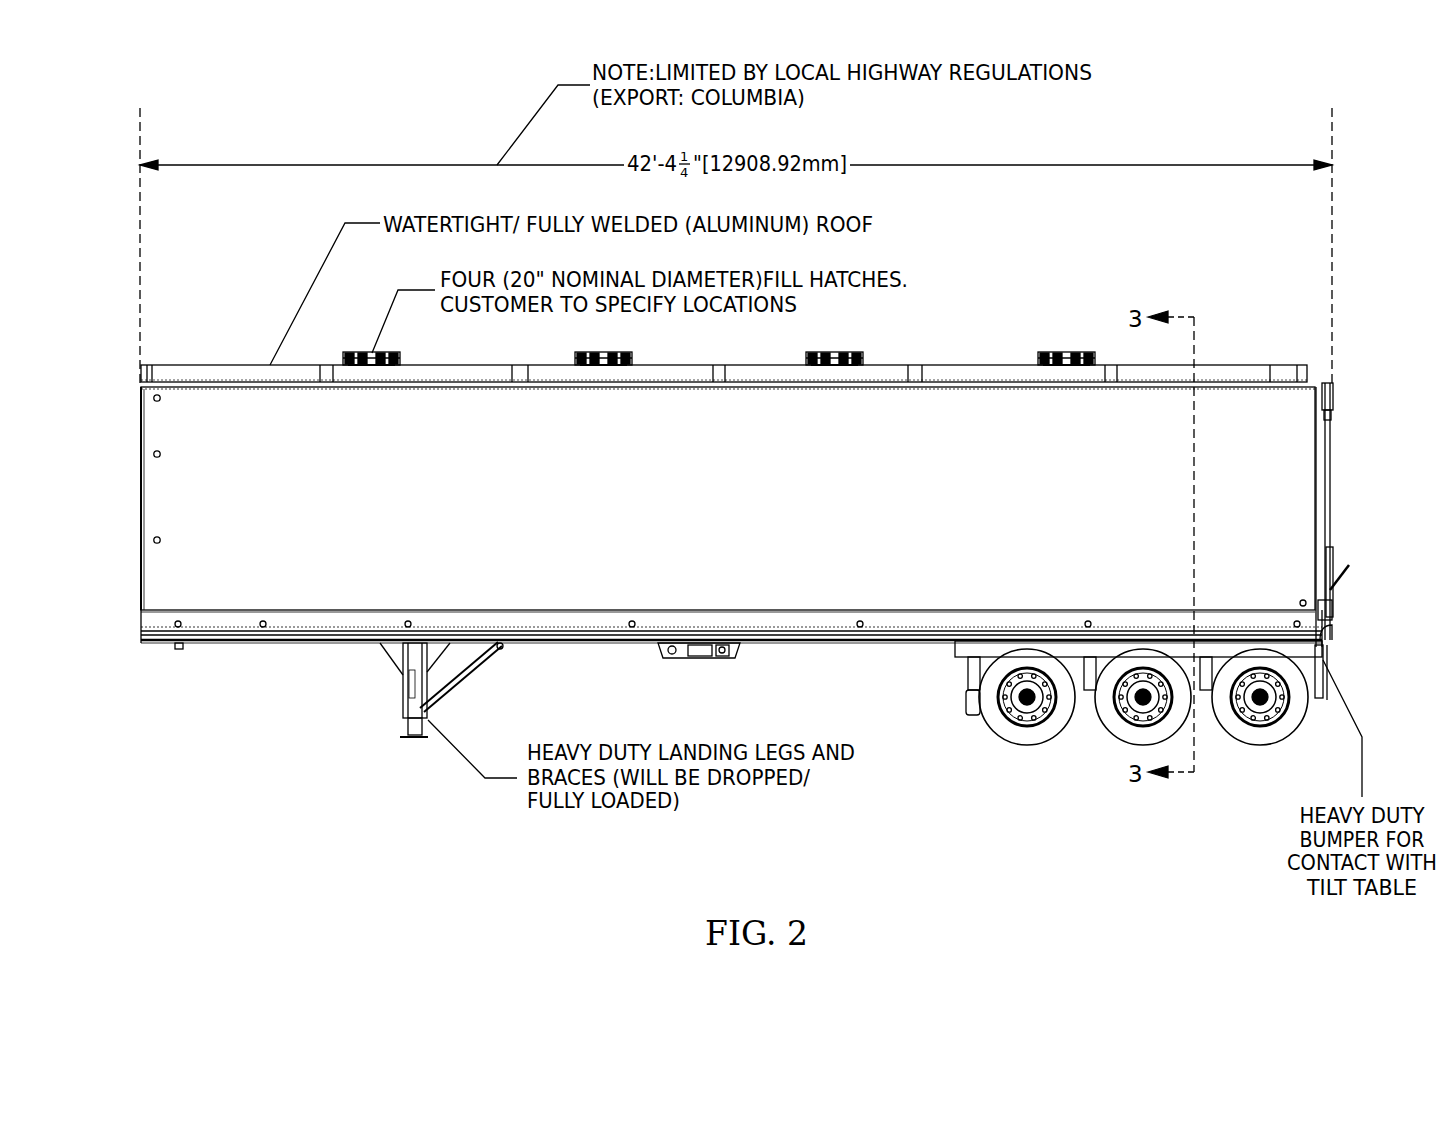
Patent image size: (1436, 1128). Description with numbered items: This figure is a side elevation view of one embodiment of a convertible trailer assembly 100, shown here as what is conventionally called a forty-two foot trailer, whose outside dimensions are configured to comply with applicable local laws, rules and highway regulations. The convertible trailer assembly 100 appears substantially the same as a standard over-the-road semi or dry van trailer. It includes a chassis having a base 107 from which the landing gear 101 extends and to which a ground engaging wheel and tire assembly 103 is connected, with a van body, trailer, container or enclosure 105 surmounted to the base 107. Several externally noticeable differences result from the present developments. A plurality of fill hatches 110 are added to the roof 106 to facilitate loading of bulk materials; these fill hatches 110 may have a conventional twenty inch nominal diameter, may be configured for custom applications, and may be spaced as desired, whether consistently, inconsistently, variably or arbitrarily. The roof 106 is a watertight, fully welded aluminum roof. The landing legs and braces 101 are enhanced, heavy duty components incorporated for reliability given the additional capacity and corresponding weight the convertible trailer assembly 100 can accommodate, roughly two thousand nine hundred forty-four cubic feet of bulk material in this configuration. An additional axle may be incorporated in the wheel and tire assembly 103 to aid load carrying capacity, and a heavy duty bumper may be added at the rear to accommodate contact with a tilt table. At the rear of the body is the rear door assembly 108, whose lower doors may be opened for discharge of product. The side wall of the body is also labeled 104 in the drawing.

The convertible trailer assembly 100 is at (126, 331).
The landing gear 101 is at (352, 715).
The ground engaging wheel and tire assembly 103 is at (968, 752).
The side wall 104 is at (141, 516).
The van body 105 is at (125, 405).
The roof 106 is at (1248, 365).
The base 107 is at (252, 650).
The rear door assembly 108 is at (1350, 448).
The fill hatches 110 is at (1065, 352).